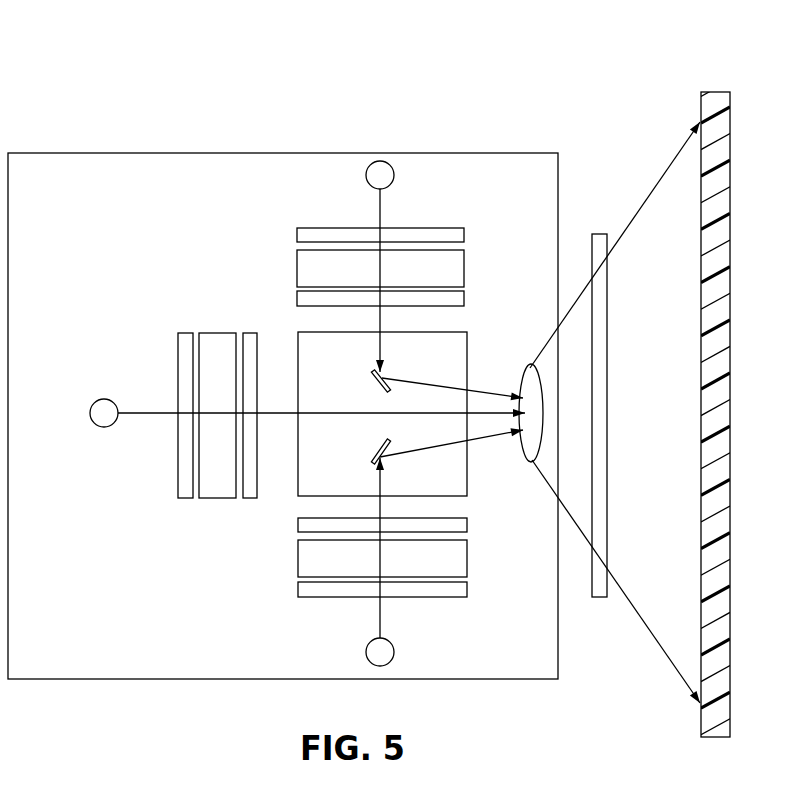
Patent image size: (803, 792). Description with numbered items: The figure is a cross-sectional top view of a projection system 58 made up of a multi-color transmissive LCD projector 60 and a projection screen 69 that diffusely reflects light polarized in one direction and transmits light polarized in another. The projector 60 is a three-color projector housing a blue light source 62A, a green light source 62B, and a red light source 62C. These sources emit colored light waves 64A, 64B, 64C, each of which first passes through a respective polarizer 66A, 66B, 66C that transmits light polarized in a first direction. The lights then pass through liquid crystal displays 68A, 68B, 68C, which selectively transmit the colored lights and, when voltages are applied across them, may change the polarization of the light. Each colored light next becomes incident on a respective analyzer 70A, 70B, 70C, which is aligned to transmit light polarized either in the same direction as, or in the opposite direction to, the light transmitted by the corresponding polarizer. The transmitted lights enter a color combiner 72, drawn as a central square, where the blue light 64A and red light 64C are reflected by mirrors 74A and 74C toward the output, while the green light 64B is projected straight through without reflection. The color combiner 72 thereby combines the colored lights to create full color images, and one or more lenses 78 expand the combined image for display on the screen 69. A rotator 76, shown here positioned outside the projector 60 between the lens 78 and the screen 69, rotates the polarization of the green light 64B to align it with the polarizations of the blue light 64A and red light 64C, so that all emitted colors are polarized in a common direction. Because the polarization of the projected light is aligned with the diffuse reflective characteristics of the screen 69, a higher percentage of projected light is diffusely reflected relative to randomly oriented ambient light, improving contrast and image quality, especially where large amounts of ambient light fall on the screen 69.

The projection system 58 is at (304, 87).
The multi-color transmissive LCD projector 60 is at (243, 153).
The blue light source 62A is at (393, 177).
The green light source 62B is at (90, 413).
The red light source 62C is at (366, 655).
The blue light 64A is at (380, 218).
The green light 64B is at (155, 413).
The red light 64C is at (380, 633).
The polarizer 66A is at (464, 237).
The polarizer 66B is at (178, 344).
The polarizer 66C is at (467, 589).
The liquid crystal display 68A is at (297, 268).
The liquid crystal display 68B is at (218, 333).
The liquid crystal display 68C is at (298, 562).
The analyzer 70A is at (464, 299).
The analyzer 70B is at (250, 498).
The analyzer 70C is at (467, 525).
The color combiner 72 is at (467, 355).
The mirror 74A is at (374, 378).
The mirror 74C is at (372, 454).
The rotator 76 is at (600, 234).
The lens 78 is at (545, 400).
The projection screen 69 is at (715, 92).